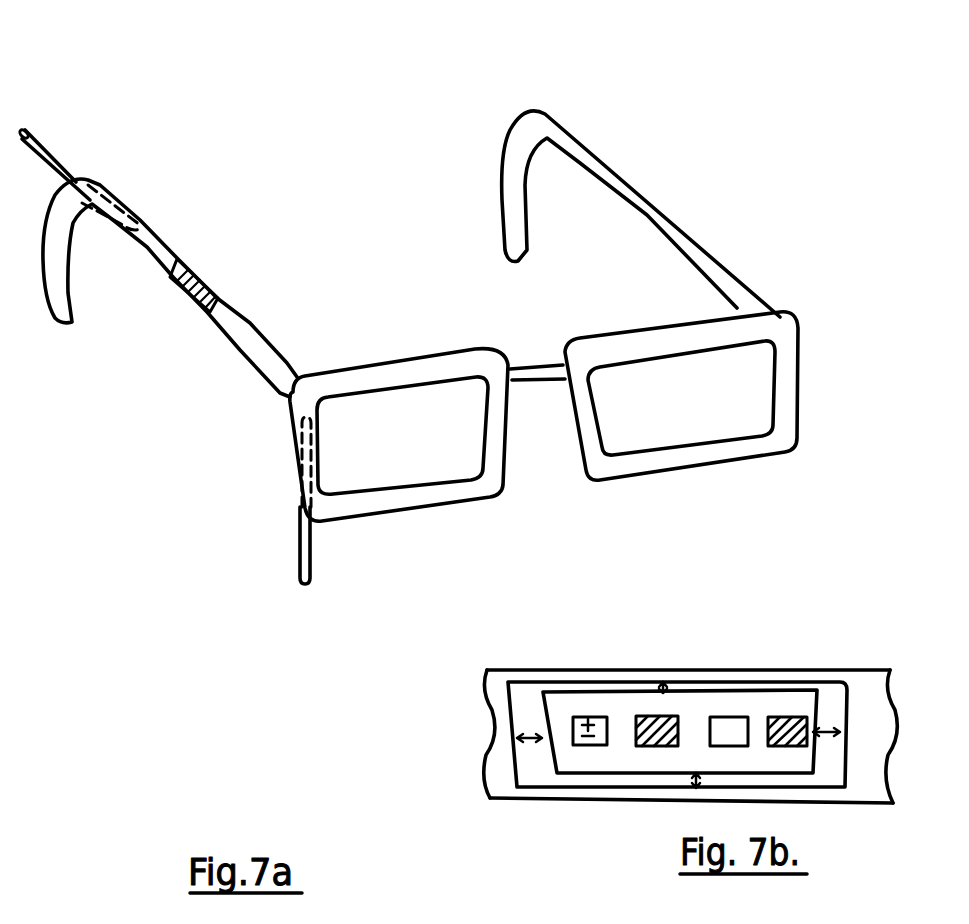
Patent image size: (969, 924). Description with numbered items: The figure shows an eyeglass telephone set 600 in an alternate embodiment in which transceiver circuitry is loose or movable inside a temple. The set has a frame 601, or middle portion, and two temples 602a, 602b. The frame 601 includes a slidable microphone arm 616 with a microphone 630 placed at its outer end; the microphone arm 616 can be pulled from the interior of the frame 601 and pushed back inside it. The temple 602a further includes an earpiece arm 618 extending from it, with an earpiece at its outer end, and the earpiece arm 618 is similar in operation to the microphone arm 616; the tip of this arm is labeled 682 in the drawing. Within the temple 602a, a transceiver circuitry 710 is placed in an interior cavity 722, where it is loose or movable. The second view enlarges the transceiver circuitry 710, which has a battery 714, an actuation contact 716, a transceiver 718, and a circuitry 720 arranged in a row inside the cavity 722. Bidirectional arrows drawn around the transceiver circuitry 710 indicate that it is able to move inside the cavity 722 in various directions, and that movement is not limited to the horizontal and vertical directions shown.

In FIG. 7A, the eyeglass telephone set 600 is at (748, 52).
In FIG. 7A, the frame 601 is at (706, 468).
In FIG. 7A, the temple 602a is at (248, 318).
In FIG. 7B, the temple 602a is at (816, 671).
In FIG. 7A, the temple 602b is at (653, 197).
In FIG. 7A, the earpiece arm 618 is at (60, 152).
In FIG. 7A, the wire tip connector 682 is at (24, 129).
In FIG. 7A, the transceiver circuitry 710 is at (204, 271).
In FIG. 7B, the transceiver circuitry 710 is at (683, 692).
In FIG. 7A, the microphone arm 616 is at (313, 548).
In FIG. 7A, the microphone 630 is at (310, 583).
In FIG. 7B, the interior cavity 722 is at (523, 697).
In FIG. 7B, the battery 714 is at (590, 747).
In FIG. 7B, the actuation contact 716 is at (662, 747).
In FIG. 7B, the transceiver 718 is at (733, 747).
In FIG. 7B, the circuitry 720 is at (773, 717).